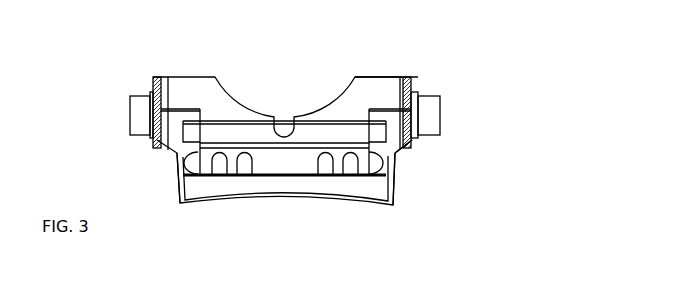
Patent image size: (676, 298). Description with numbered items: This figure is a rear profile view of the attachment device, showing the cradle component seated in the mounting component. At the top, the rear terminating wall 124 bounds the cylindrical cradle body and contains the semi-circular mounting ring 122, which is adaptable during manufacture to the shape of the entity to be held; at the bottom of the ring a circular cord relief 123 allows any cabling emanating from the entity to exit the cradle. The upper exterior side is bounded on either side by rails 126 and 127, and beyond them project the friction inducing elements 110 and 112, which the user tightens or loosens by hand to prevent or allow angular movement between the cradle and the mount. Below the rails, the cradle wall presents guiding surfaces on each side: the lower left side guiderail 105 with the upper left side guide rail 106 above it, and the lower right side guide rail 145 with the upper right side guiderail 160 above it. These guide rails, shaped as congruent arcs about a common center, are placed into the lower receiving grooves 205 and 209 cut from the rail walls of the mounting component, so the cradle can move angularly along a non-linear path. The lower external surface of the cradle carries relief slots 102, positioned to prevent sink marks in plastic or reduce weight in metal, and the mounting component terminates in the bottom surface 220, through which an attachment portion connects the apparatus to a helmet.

The relief slots 102 is at (341, 176).
The lower left side guiderail 105 is at (388, 135).
The upper left side guide rail 106 is at (372, 108).
The friction inducing element 110 is at (130, 105).
The friction inducing element 112 is at (441, 105).
The semi-circular mounting ring 122 is at (245, 105).
The circular cord relief 123 is at (282, 141).
The rear terminating wall 124 is at (371, 92).
The rail 126 is at (160, 75).
The rail 127 is at (408, 77).
The lower right side guide rail 145 is at (183, 128).
The upper right side guiderail 160 is at (205, 106).
The lower receiving groove 205 is at (394, 145).
The lower receiving groove 209 is at (181, 143).
The bottom surface 220 is at (258, 204).